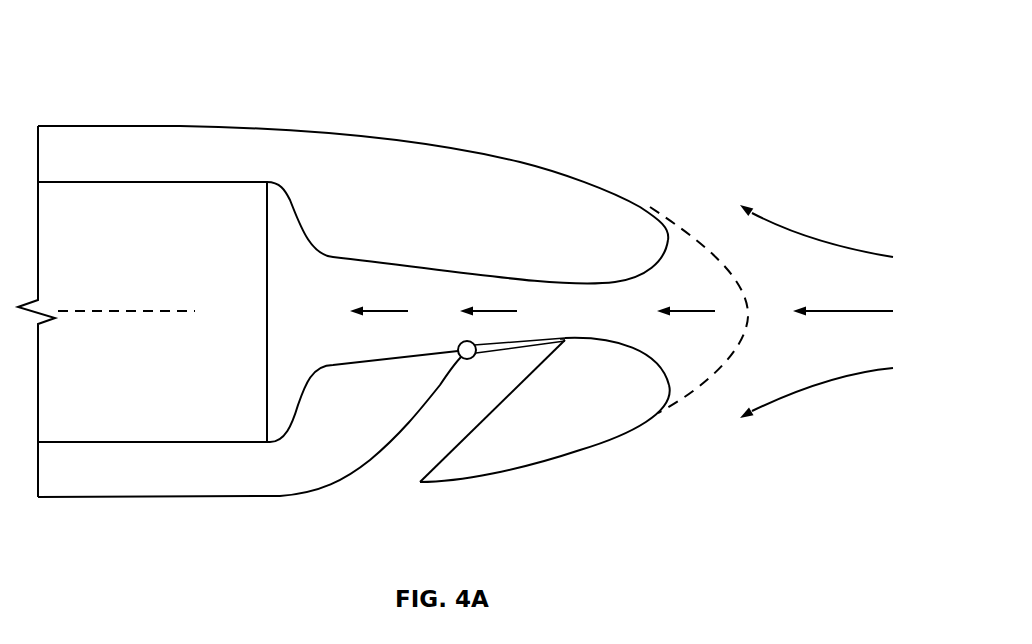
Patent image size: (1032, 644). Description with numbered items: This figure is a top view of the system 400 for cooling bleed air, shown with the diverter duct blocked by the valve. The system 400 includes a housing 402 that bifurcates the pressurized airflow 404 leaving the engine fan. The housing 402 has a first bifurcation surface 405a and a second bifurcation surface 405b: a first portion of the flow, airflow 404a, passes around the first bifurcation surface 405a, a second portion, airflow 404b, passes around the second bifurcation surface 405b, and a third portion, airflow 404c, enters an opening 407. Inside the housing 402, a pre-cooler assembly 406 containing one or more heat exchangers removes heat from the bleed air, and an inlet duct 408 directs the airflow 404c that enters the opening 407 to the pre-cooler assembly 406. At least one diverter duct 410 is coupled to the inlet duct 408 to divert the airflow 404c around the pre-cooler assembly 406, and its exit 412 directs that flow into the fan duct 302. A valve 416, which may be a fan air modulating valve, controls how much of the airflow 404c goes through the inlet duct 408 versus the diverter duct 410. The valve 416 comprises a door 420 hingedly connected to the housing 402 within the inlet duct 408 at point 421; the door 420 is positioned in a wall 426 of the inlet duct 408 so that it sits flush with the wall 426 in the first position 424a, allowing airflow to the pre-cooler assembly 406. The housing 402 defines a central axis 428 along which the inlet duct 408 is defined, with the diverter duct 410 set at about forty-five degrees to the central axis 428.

The system for cooling bleed air 400 is at (170, 41).
The housing 402 is at (353, 180).
The first bifurcation surface 405a is at (490, 154).
The second bifurcation surface 405b is at (561, 453).
The pre-cooler assembly 406 is at (252, 325).
The inlet duct 408 is at (332, 325).
The diverter duct 410 is at (545, 427).
The exit 412 is at (382, 503).
The valve 416 is at (565, 358).
The door 420 is at (500, 350).
The point 421 is at (440, 356).
The wall 426 is at (345, 366).
The central axis 428 is at (116, 311).
The fan duct 302 is at (250, 453).
The airflow 404 is at (849, 152).
The airflow 404a is at (790, 237).
The airflow 404b is at (815, 387).
The airflow 404c is at (380, 311).
The opening 407 is at (690, 276).
The first position 424a is at (547, 314).